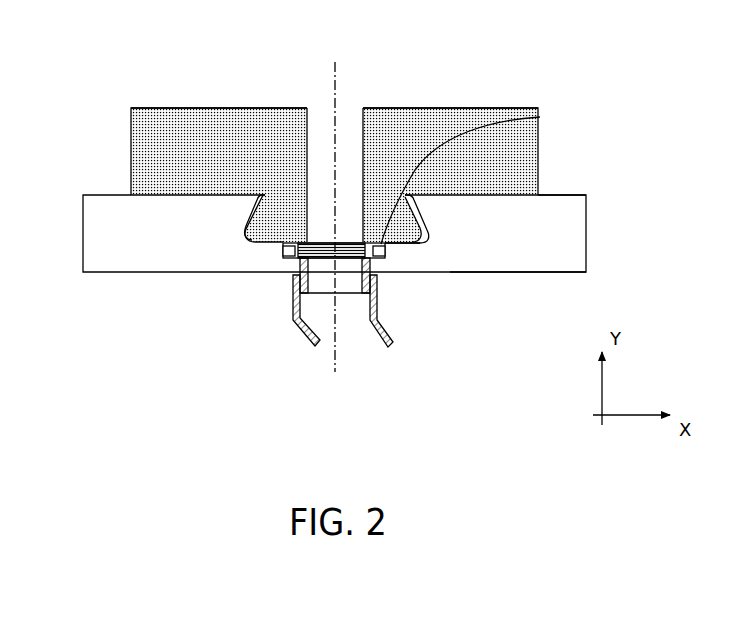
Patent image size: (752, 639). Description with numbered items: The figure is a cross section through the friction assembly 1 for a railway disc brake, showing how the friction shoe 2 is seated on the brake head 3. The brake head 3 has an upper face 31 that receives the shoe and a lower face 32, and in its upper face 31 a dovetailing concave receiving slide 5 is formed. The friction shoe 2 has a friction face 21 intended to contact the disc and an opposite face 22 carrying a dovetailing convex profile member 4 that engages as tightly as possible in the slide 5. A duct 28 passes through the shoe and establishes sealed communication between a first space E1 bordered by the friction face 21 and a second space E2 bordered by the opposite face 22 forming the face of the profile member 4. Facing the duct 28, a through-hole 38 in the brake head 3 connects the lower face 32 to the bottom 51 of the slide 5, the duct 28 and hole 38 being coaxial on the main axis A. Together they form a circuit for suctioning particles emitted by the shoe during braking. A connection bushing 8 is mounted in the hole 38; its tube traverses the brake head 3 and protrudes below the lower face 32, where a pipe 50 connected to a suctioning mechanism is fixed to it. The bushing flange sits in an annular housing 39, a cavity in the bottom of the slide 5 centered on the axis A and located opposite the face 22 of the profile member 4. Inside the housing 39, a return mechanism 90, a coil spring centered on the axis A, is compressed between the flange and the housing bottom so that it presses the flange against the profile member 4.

The friction assembly 1 is at (108, 72).
The friction shoe 2 is at (195, 112).
The brake head 3 is at (120, 208).
The profile member 4 is at (273, 222).
The receiving slide 5 is at (403, 226).
The connection bushing 8 is at (350, 240).
The friction face 21 is at (437, 108).
The opposite face 22 is at (413, 237).
The duct 28 is at (345, 131).
The upper face 31 is at (551, 196).
The lower face 32 is at (533, 273).
The through-hole 38 is at (346, 265).
The annular housing 39 is at (540, 117).
The pipe 50 is at (386, 324).
The bottom of the slide 51 is at (248, 230).
The return mechanism 90 is at (297, 269).
The first space E1 is at (323, 99).
The second space E2 is at (322, 263).
The main axis A is at (338, 232).